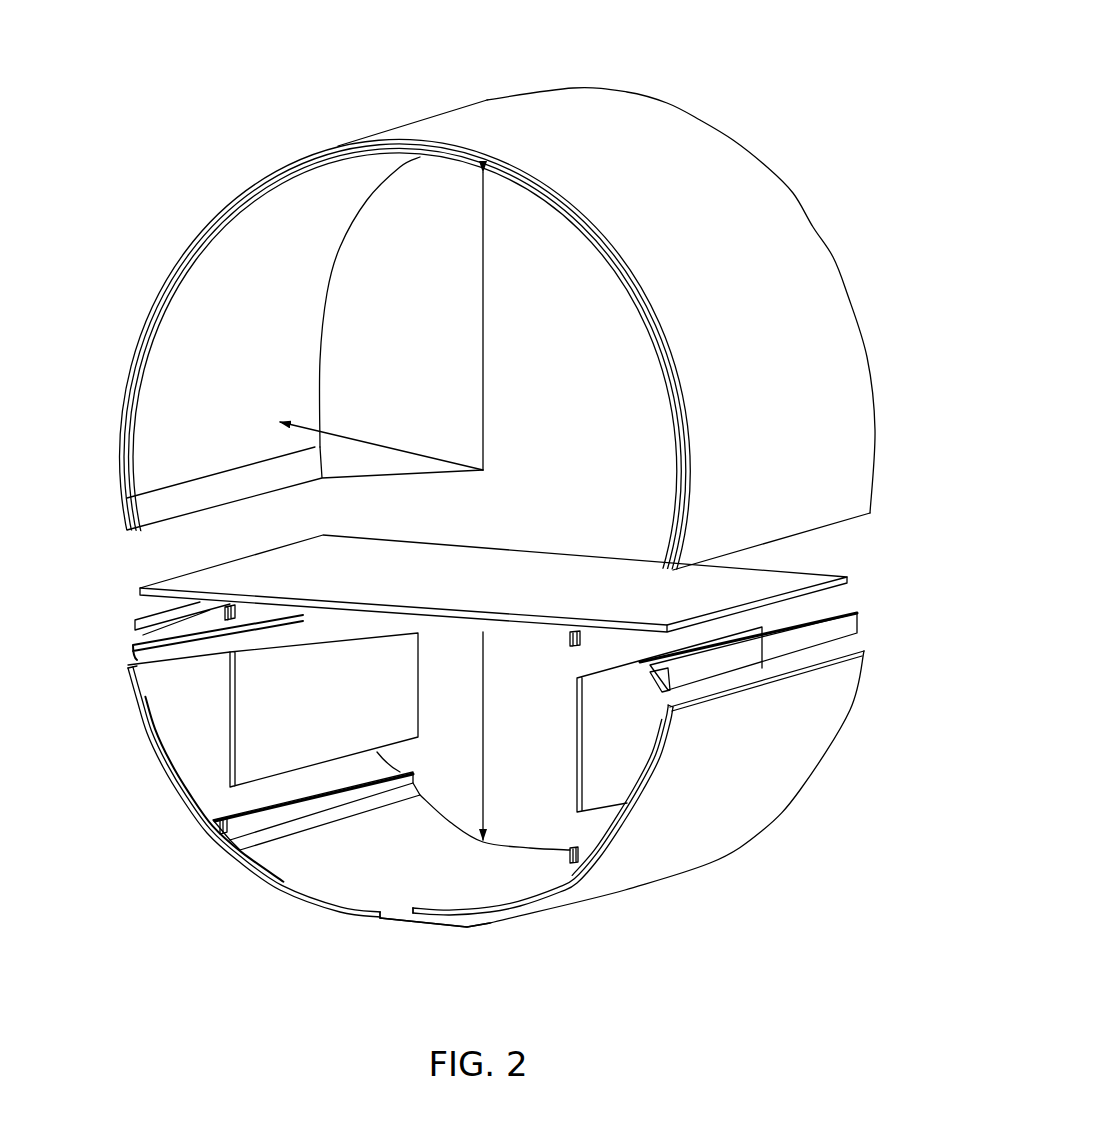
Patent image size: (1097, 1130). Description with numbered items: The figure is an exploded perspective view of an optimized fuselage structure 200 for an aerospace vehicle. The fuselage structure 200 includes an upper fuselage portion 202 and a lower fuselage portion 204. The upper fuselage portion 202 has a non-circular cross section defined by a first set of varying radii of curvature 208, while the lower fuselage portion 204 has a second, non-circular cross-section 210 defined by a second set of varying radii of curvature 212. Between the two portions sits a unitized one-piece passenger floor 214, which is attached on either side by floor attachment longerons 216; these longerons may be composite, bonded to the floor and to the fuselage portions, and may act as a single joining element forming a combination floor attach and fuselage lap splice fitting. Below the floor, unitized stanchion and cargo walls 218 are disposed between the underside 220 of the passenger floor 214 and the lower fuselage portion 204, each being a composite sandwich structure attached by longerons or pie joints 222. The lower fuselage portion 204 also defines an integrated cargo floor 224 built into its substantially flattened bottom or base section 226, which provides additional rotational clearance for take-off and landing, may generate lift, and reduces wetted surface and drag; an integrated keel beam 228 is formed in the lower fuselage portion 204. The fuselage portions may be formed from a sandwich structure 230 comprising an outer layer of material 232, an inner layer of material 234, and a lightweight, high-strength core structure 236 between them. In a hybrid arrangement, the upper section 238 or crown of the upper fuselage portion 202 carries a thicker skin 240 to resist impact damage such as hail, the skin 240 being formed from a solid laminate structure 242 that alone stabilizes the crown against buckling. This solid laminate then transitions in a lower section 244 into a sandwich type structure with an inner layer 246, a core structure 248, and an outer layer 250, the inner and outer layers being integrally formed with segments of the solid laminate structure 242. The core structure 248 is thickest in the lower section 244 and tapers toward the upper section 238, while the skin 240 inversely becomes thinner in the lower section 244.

The fuselage structure 200 is at (776, 150).
The upper fuselage portion 202 is at (795, 193).
The lower fuselage portion 204 is at (578, 260).
The first set of varying radii of curvature 208 is at (483, 312).
The second non-circular cross-section 210 is at (764, 848).
The second set of varying radii of curvature 212 is at (487, 790).
The unitized one-piece passenger floor 214 is at (512, 545).
The floor attachment longerons 216 is at (133, 647).
The unitized stanchion and cargo walls 218 is at (412, 660).
The underside 220 is at (150, 598).
The pie joints 222 is at (570, 640).
The integrated cargo floor 224 is at (512, 853).
The substantially flattened bottom or base section 226 is at (413, 942).
The integrated keel beam 228 is at (381, 919).
The sandwich structure 230 is at (167, 792).
The outer layer of material 232 is at (225, 856).
The inner layer of material 234 is at (300, 878).
The core structure 236 is at (255, 885).
The upper section 238 is at (486, 96).
The skin 240 is at (620, 105).
The solid laminate structure 242 is at (433, 166).
The lower section 244 is at (675, 458).
The inner layer 246 is at (653, 366).
The core structure 248 is at (668, 400).
The outer layer 250 is at (700, 492).